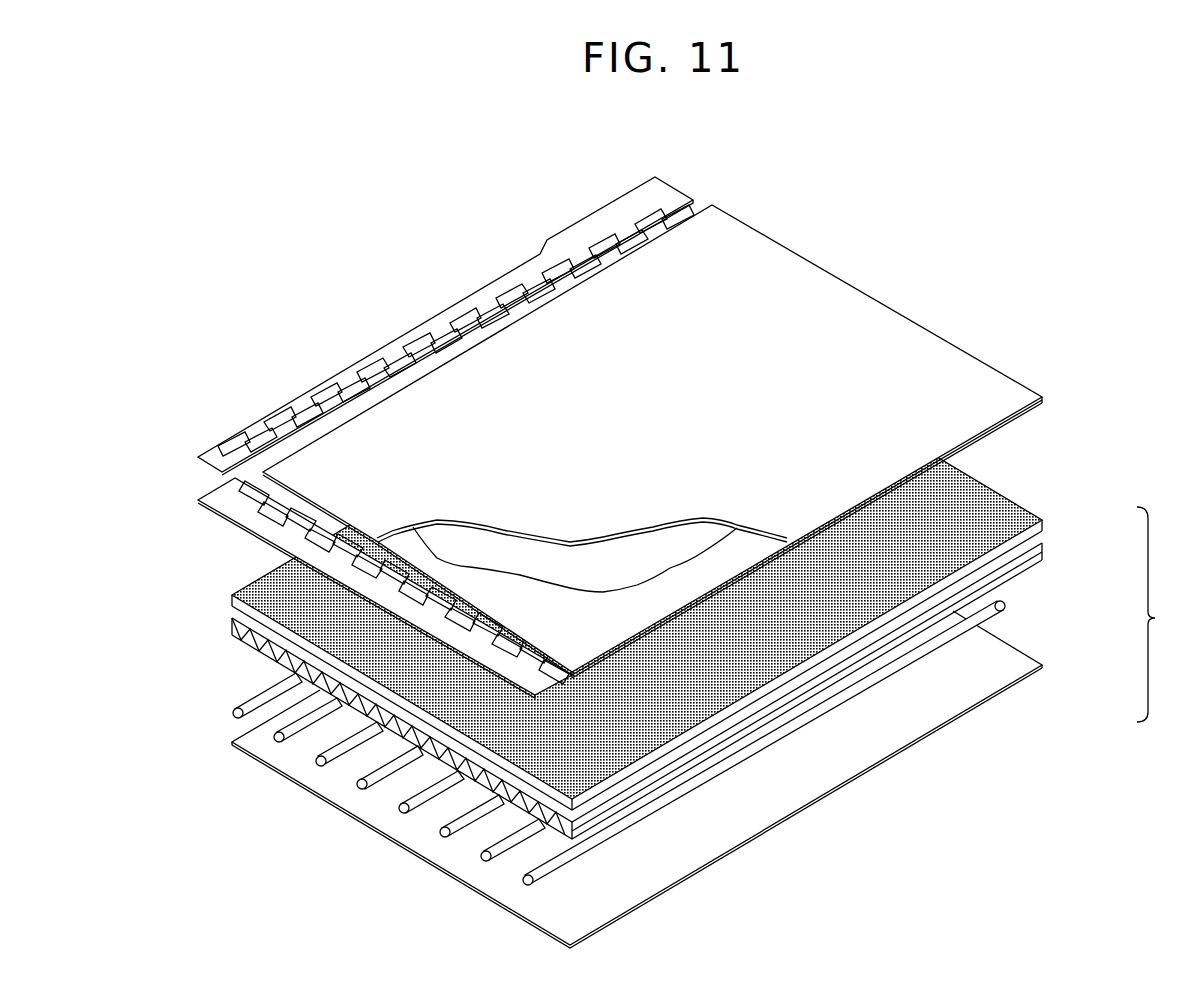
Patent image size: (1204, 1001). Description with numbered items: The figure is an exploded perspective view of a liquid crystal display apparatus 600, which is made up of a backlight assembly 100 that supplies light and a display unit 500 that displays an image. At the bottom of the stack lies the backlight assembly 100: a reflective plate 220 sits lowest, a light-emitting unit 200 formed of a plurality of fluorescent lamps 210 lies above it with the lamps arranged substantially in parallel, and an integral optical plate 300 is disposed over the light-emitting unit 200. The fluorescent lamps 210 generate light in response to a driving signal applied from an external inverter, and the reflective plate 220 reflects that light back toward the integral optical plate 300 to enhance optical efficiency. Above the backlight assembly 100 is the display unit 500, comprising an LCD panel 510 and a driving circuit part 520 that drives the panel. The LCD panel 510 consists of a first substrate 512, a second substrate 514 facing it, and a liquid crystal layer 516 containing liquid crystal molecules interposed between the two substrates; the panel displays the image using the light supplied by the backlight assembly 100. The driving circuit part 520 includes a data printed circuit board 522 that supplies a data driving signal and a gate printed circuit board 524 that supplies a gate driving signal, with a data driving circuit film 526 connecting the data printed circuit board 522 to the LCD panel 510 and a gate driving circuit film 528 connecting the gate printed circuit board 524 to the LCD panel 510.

The LCD apparatus 600 is at (797, 140).
The backlight assembly 100 is at (717, 631).
The light-emitting unit 200 is at (686, 737).
The fluorescent lamps 210 is at (1003, 614).
The reflective plate 220 is at (1005, 706).
The integral optical plate 300 is at (1044, 506).
The display unit 500 is at (455, 255).
The LCD panel 510 is at (652, 441).
The first substrate 512 is at (750, 550).
The second substrate 514 is at (960, 378).
The liquid crystal layer 516 is at (597, 553).
The driving circuit part 520 is at (195, 486).
The data printed circuit board 522 is at (385, 358).
The gate printed circuit board 524 is at (230, 506).
The data driving circuit film 526 is at (437, 345).
The gate driving circuit film 528 is at (273, 515).